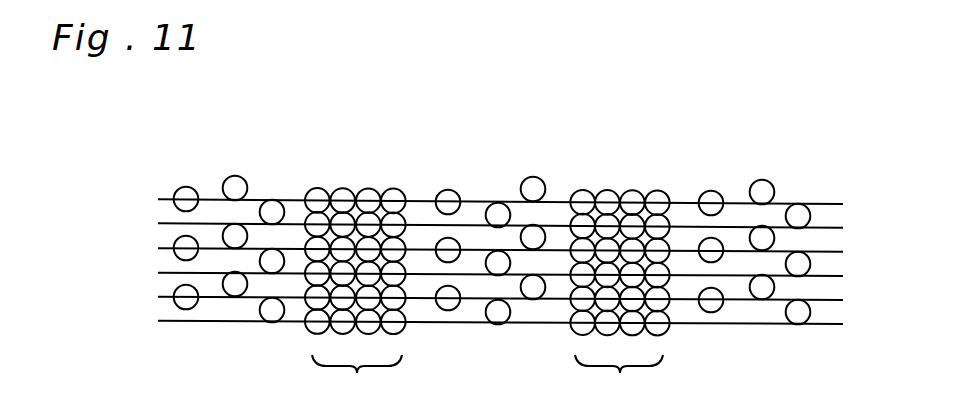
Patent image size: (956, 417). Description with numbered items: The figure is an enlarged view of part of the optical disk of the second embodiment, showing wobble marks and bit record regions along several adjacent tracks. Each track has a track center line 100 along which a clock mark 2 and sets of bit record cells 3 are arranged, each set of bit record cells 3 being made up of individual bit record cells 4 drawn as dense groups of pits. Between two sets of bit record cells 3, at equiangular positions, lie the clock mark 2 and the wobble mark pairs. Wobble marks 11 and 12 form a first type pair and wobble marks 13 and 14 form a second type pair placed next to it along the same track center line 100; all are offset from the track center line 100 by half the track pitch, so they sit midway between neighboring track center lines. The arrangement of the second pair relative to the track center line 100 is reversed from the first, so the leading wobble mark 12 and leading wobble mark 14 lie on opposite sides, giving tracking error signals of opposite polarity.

The track center line 100 is at (170, 197).
The clock mark 2 is at (187, 192).
The set of bit record cells 3 is at (487, 386).
The bit record cell 4 is at (340, 198).
The wobble mark 11 is at (762, 192).
The wobble mark 12 is at (803, 217).
The wobble mark 13 is at (498, 215).
The wobble mark 14 is at (543, 188).